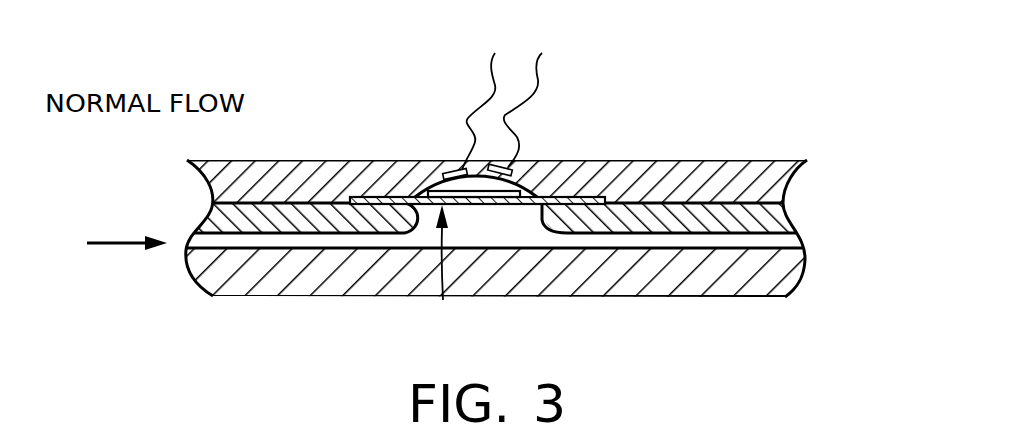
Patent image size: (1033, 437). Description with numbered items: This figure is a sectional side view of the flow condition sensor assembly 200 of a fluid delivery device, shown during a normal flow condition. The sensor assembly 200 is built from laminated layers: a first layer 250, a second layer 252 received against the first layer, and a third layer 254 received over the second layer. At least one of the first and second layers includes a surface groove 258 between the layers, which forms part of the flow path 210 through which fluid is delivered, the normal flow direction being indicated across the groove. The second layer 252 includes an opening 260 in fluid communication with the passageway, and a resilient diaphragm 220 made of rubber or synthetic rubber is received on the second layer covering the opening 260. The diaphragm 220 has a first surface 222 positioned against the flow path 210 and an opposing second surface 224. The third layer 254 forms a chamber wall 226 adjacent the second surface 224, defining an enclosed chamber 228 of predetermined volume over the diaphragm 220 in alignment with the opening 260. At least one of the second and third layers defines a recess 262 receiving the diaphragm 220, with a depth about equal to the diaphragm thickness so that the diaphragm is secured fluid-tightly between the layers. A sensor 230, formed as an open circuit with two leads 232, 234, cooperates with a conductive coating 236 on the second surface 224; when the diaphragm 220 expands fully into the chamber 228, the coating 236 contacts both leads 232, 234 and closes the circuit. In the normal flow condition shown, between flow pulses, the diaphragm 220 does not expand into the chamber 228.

The flow condition sensor assembly 200 is at (467, 186).
The flow path 210 is at (113, 242).
The resilient diaphragm 220 is at (443, 300).
The first surface 222 is at (530, 198).
The second surface 224 is at (522, 198).
The chamber wall 226 is at (524, 191).
The chamber 228 is at (541, 197).
The sensor 230 is at (548, 72).
The first lead 232 is at (455, 171).
The second lead 234 is at (512, 169).
The conductive coating 236 is at (442, 158).
The first layer 250 is at (735, 283).
The second layer 252 is at (790, 218).
The third layer 254 is at (765, 170).
The surface groove 258 is at (253, 250).
The opening 260 is at (405, 234).
The recess 262 is at (352, 200).